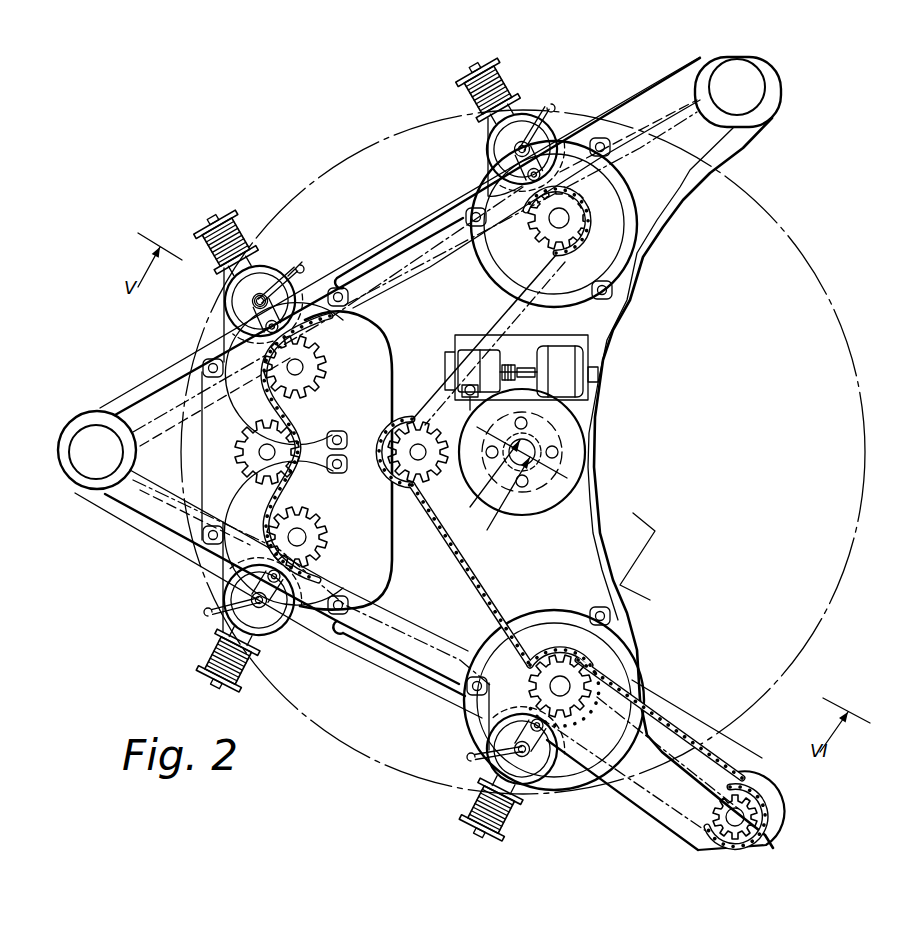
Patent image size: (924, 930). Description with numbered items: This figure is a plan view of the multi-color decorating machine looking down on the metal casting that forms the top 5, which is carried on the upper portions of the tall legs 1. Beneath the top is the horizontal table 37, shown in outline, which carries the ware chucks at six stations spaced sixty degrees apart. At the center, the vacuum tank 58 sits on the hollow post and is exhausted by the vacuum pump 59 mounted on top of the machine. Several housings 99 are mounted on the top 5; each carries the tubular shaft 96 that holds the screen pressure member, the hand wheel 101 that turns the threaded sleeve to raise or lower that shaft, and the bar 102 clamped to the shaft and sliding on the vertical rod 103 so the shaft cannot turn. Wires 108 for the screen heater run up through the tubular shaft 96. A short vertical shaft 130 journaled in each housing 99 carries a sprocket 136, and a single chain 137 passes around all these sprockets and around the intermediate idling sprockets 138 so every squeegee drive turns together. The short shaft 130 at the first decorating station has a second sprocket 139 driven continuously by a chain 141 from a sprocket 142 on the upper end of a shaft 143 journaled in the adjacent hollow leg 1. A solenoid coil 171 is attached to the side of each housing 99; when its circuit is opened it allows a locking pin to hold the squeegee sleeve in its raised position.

The tall legs 1 is at (58, 456).
The top 5 is at (600, 329).
The table 37 is at (783, 235).
The vacuum tank 58 is at (573, 428).
The vacuum pump 59 is at (495, 355).
The tubular shaft 96 is at (225, 312).
The housing 99 is at (617, 250).
The hand wheel 101 is at (236, 294).
The bar 102 is at (252, 302).
The vertical rod 103 is at (294, 272).
The wires 108 is at (280, 270).
The short vertical shaft 130 is at (298, 545).
The sprockets 136 is at (310, 527).
The chain 137 is at (435, 270).
The idling sprockets 138 is at (246, 440).
The second sprocket 139 is at (572, 672).
The chain 141 is at (650, 723).
The sprocket 142 is at (740, 800).
The shaft 143 is at (746, 822).
The solenoid coil 171 is at (233, 224).